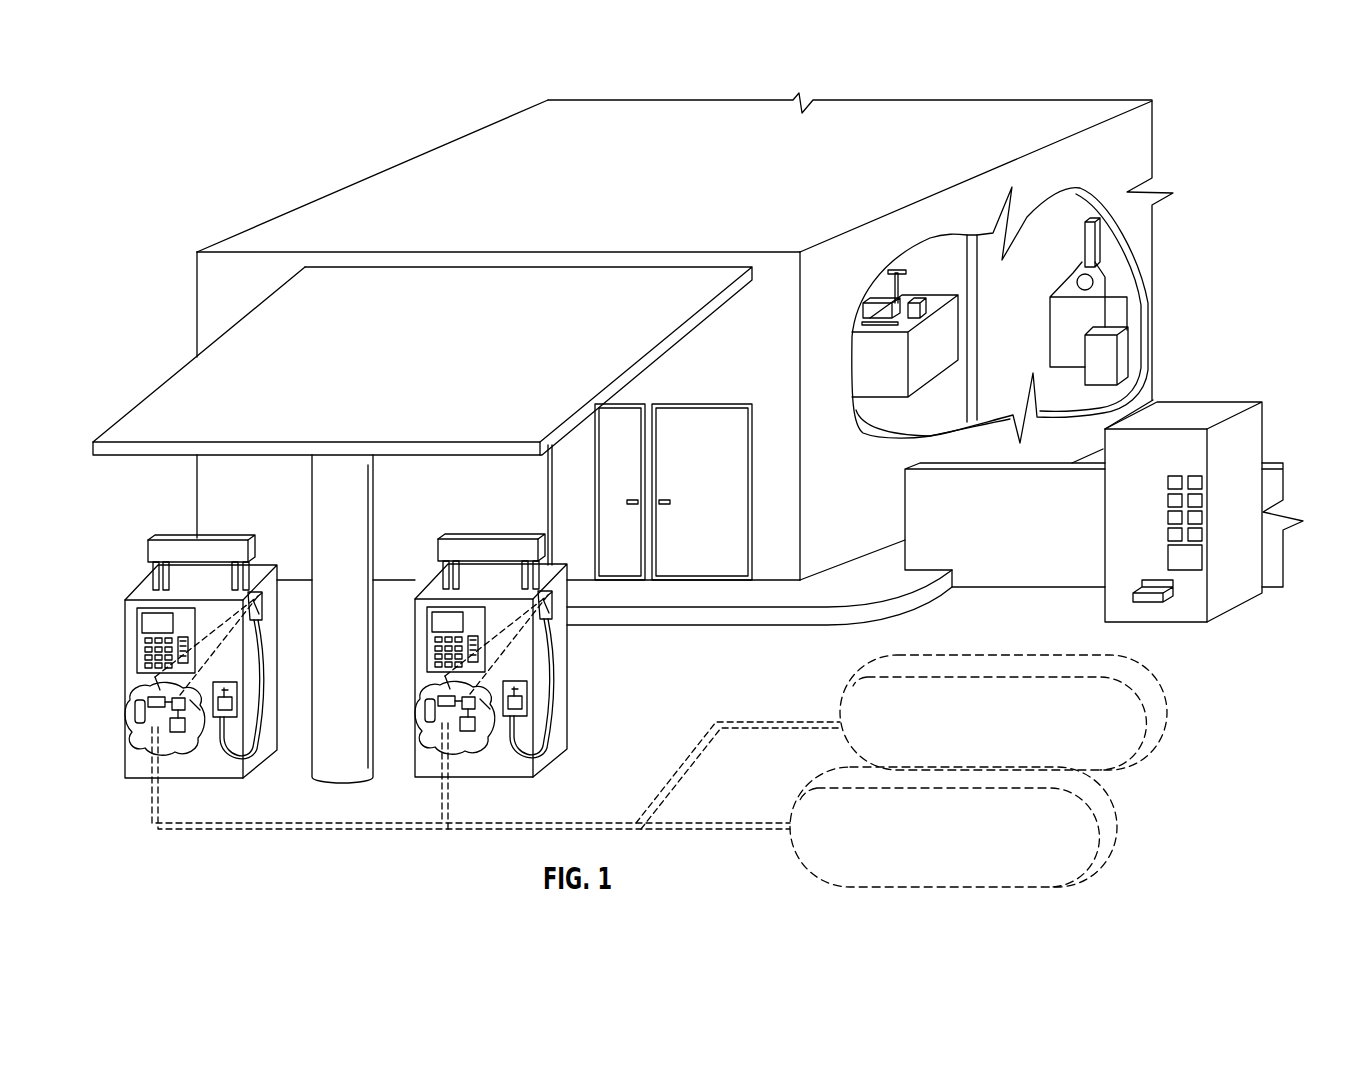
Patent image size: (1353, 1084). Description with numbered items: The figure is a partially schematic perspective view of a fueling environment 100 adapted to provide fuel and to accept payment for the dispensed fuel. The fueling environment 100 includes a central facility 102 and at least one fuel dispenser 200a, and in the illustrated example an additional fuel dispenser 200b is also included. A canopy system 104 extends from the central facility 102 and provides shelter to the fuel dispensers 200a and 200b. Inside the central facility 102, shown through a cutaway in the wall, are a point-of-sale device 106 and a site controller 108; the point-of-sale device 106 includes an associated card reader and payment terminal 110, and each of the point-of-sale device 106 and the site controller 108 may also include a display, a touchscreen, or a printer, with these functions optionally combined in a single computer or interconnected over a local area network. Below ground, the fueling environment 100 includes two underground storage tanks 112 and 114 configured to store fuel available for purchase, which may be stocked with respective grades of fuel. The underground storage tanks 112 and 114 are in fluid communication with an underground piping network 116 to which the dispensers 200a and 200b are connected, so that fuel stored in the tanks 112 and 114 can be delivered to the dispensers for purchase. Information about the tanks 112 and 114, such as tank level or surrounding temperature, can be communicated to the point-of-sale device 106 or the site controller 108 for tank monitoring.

The fueling environment 100 is at (1240, 207).
The central facility 102 is at (821, 153).
The canopy system 104 is at (417, 305).
The point-of-sale device 106 is at (870, 293).
The site controller 108 is at (1085, 383).
The card reader and payment terminal 110 is at (920, 296).
The underground storage tank 112 is at (1032, 731).
The underground storage tank 114 is at (1000, 836).
The underground piping network 116 is at (368, 832).
The fuel dispenser 200a is at (411, 587).
The fuel dispenser 200b is at (118, 587).